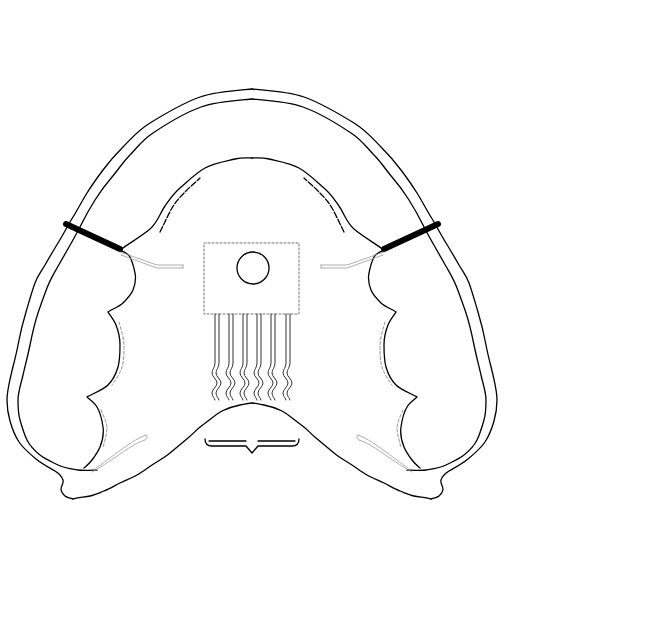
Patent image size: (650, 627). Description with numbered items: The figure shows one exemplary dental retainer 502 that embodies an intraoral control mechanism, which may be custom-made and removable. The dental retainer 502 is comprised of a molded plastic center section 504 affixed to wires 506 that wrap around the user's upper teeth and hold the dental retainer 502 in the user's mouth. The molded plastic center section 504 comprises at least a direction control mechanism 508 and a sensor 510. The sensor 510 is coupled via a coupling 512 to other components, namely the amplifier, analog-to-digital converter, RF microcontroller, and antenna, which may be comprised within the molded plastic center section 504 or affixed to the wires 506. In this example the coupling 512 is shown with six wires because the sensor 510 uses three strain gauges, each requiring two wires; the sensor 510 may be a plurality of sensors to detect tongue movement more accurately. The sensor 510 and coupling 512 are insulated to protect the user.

The dental retainer 502 is at (88, 64).
The molded plastic center section 504 is at (325, 187).
The wires 506 is at (482, 330).
The direction control mechanism 508 is at (247, 254).
The sensor 510 is at (204, 293).
The coupling 512 is at (289, 336).